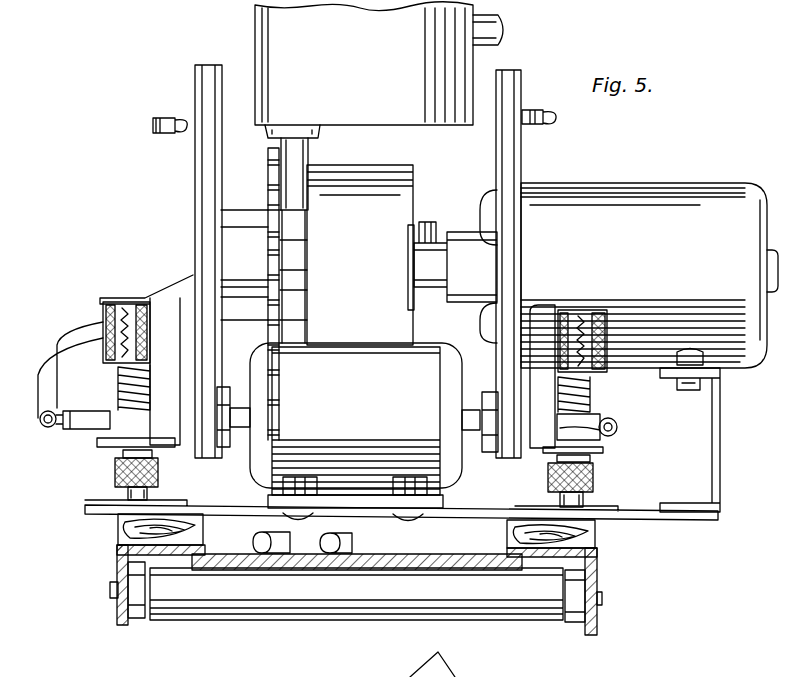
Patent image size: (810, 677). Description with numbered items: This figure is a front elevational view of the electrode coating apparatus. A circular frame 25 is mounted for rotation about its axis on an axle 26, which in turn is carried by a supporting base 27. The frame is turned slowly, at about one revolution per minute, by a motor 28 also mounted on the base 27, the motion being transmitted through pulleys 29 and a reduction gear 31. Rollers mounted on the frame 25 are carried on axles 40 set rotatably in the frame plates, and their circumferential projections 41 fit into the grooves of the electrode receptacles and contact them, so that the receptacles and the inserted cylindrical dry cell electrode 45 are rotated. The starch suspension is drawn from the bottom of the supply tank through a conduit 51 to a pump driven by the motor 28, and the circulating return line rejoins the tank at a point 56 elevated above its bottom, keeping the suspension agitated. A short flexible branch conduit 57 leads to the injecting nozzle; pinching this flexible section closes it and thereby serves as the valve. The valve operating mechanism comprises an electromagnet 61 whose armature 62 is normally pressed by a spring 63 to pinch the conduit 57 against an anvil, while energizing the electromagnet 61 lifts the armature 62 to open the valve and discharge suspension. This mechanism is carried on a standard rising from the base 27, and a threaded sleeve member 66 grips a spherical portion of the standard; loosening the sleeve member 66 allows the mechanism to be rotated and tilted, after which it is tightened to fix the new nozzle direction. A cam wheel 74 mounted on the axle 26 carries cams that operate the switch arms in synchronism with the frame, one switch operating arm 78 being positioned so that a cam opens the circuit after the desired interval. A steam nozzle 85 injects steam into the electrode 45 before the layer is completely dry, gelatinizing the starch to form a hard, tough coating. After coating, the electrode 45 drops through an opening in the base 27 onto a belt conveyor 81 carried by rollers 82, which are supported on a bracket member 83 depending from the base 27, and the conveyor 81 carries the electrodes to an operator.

The circular frame 25 is at (190, 148).
The axle 26 is at (442, 240).
The supporting base 27 is at (465, 518).
The motor 28 is at (668, 183).
The pulleys 29 is at (408, 238).
The reduction gear 31 is at (400, 200).
The axles 40 is at (455, 478).
The circumferential projections 41 is at (374, 443).
The cylindrical dry cell electrode 45 is at (293, 553).
The conduit 51 is at (310, 143).
The point of connection 56 is at (503, 41).
The branch conduit 57 is at (100, 440).
The electromagnet 61 is at (103, 319).
The armature 62 is at (113, 372).
The spring 63 is at (120, 386).
The sleeve member 66 is at (115, 472).
The cam wheel 74 is at (268, 186).
The switch operating arm 78 is at (396, 665).
The belt conveyor 81 is at (415, 562).
The rollers 82 is at (535, 622).
The bracket member 83 is at (597, 575).
The nozzle 85 is at (166, 118).